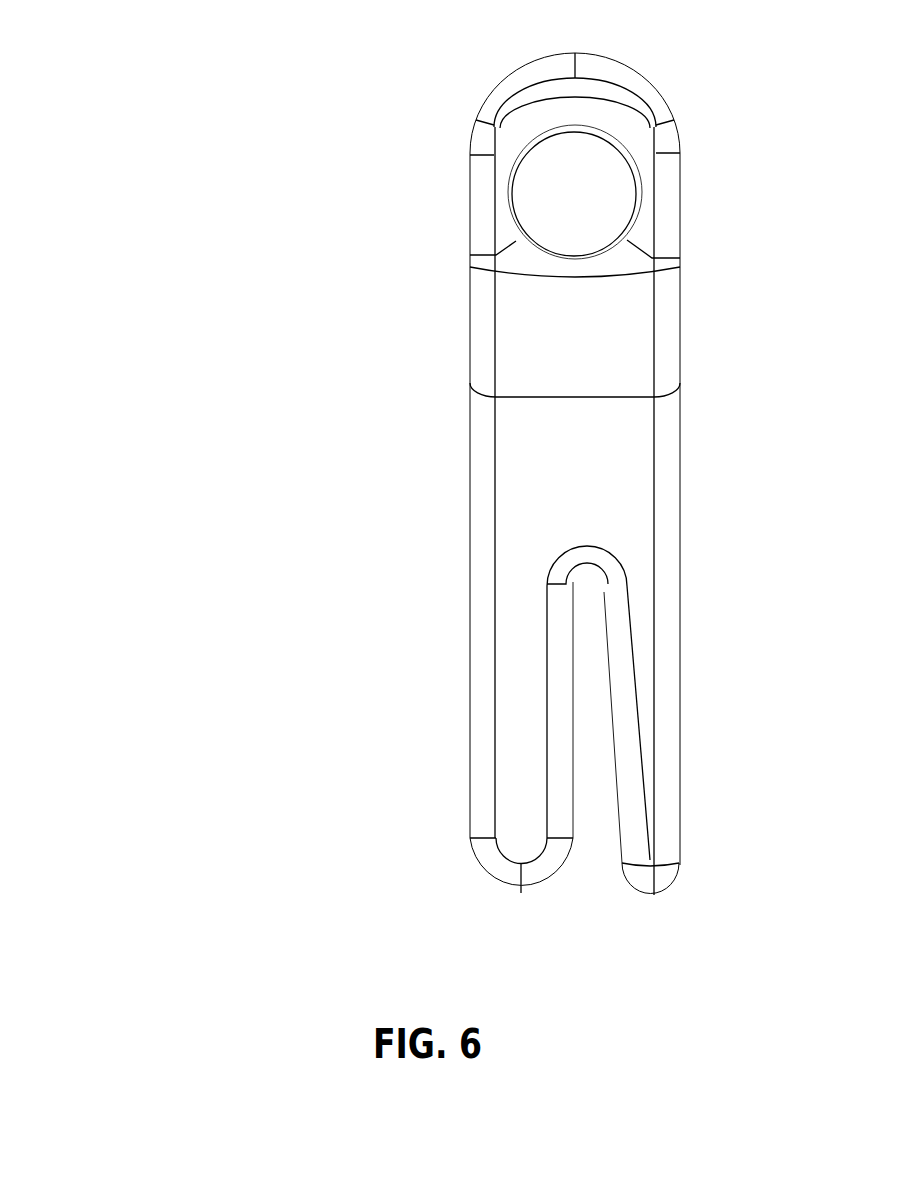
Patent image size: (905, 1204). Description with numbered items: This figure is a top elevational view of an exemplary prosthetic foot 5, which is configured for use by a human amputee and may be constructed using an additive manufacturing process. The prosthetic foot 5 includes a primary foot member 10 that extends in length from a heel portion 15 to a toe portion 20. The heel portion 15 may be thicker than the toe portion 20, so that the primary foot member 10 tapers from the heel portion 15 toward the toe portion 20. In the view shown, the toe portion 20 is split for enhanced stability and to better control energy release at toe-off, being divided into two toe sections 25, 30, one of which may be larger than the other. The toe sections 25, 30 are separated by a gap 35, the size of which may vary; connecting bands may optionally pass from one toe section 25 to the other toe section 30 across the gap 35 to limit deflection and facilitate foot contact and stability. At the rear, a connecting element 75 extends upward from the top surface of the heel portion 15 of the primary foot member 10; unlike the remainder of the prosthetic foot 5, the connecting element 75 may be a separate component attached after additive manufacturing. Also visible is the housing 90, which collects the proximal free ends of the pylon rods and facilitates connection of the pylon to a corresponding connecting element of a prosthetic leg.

The prosthetic foot 5 is at (157, 225).
The primary foot member 10 is at (510, 516).
The heel portion 15 is at (432, 88).
The toe portion 20 is at (440, 736).
The toe section 25 is at (505, 805).
The toe section 30 is at (658, 810).
The gap 35 is at (590, 588).
The connecting element 75 is at (657, 165).
The housing 90 is at (600, 162).